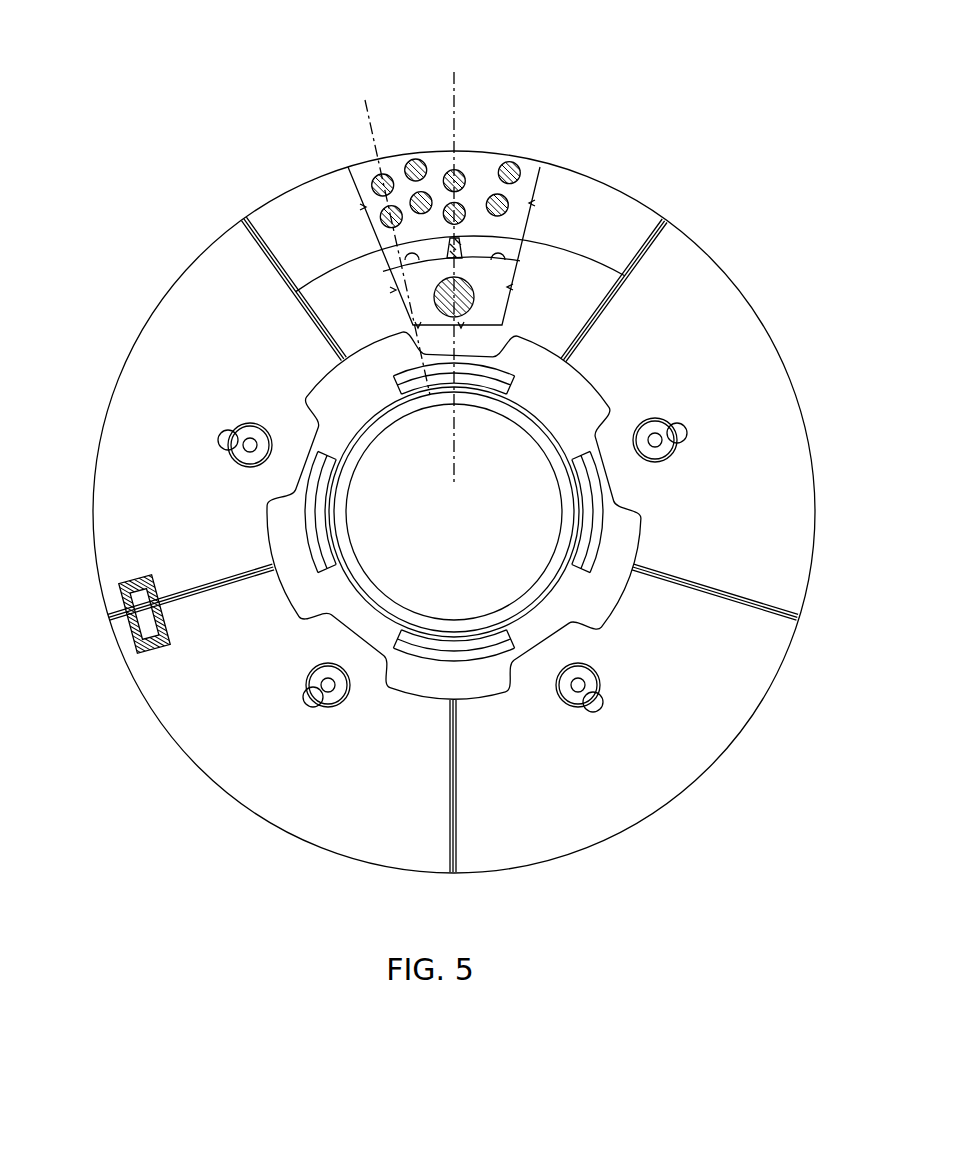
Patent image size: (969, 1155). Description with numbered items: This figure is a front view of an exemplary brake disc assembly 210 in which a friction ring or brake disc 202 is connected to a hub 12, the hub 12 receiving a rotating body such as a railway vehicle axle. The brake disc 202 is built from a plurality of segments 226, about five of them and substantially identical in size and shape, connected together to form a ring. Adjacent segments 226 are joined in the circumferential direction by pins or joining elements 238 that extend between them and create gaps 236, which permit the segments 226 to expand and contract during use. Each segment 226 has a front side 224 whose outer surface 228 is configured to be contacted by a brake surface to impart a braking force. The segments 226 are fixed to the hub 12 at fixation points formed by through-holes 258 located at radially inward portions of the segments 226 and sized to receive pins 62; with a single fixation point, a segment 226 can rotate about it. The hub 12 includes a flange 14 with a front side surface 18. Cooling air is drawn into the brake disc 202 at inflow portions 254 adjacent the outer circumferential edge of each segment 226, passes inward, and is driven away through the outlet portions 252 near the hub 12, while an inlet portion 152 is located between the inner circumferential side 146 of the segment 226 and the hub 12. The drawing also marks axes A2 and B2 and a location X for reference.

The brake disc assembly 210 is at (448, 449).
The brake disc 202 is at (441, 469).
The front side 224 is at (682, 816).
The segments 226 is at (290, 210).
The outer surface 228 is at (328, 286).
The gaps 236 is at (513, 162).
The joining elements 238 is at (170, 618).
The inflow portions 254 is at (467, 170).
The through-holes 258 is at (473, 288).
The flange 14 is at (503, 272).
The front side surface 18 is at (495, 303).
The point X is at (630, 268).
The axis A2 is at (452, 80).
The axis B2 is at (363, 106).
The inlet portion 152 is at (570, 378).
The outlet portions 252 is at (313, 502).
The hub 12 is at (548, 453).
The pins 62 is at (463, 330).
The inner circumferential side 146 is at (377, 350).